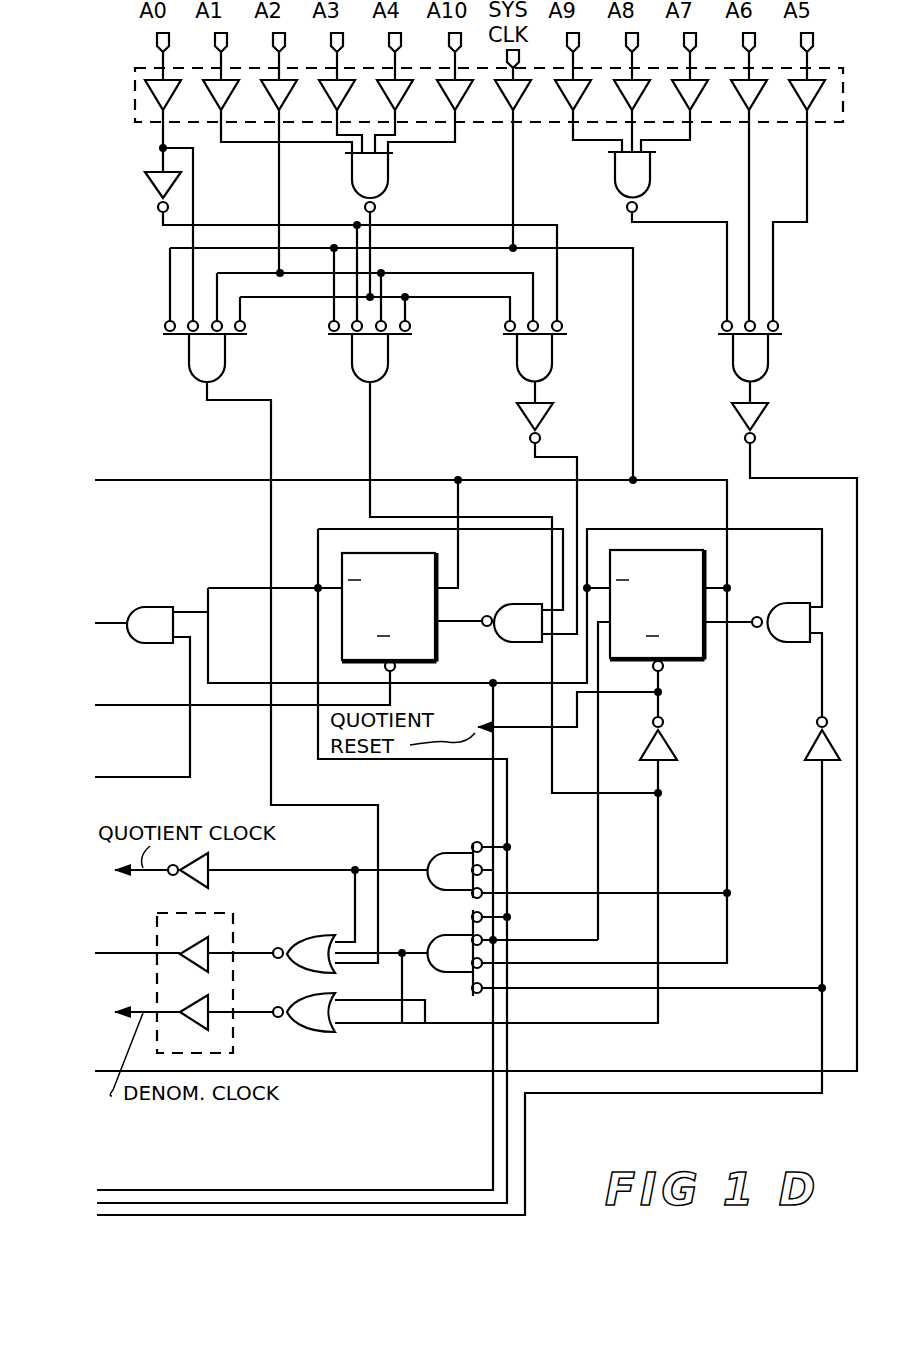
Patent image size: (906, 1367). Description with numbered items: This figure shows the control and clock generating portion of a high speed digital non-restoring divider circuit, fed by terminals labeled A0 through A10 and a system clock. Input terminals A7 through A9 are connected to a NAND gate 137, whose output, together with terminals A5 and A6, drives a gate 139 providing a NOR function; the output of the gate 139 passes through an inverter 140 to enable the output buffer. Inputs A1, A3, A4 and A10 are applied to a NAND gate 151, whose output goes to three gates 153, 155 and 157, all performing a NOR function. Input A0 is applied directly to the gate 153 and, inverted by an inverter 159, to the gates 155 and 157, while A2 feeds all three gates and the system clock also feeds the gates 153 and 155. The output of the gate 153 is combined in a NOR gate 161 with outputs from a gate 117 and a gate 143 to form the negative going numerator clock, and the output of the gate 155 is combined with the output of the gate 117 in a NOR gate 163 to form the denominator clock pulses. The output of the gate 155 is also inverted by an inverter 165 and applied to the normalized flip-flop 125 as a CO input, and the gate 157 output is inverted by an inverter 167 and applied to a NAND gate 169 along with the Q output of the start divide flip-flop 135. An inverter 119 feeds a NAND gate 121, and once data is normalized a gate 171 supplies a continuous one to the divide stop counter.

The gate 117 is at (441, 935).
The inverter 119 is at (811, 748).
The NAND gate 121 is at (775, 604).
The normalized flip-flop 125 is at (704, 659).
The start divide flip-flop 135 is at (437, 637).
The NAND gate 137 is at (615, 186).
The gate 139 is at (733, 368).
The inverter 140 is at (738, 415).
The gate 143 is at (432, 860).
The NAND gate 151 is at (352, 186).
The gate 153 is at (189, 369).
The gate 155 is at (352, 369).
The gate 157 is at (517, 369).
The inverter 159 is at (157, 192).
The NOR gate 161 is at (298, 973).
The NOR gate 163 is at (305, 1033).
The inverter 165 is at (672, 750).
The inverter 167 is at (545, 422).
The NAND gate 169 is at (517, 604).
The gate 171 is at (160, 645).